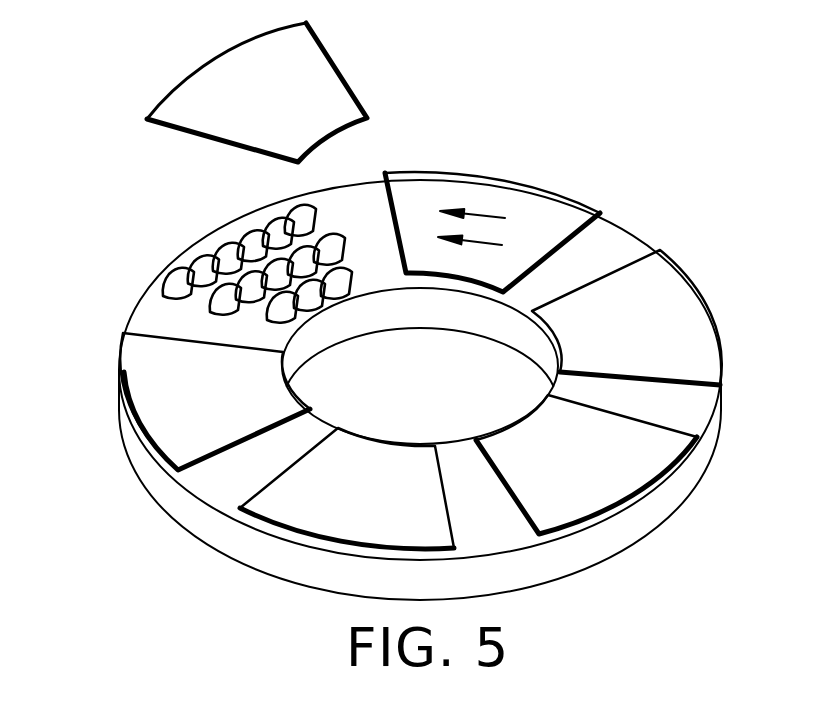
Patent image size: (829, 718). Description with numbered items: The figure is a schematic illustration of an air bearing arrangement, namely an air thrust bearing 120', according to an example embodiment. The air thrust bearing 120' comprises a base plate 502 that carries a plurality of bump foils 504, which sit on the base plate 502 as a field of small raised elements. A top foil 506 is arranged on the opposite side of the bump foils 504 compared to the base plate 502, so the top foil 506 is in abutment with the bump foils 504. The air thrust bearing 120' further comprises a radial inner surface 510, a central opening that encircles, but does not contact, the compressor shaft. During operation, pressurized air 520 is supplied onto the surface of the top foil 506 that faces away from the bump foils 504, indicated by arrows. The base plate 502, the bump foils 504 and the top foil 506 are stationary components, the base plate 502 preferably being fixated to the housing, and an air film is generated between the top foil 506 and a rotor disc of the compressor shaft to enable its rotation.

The air thrust bearing 120' is at (425, 321).
The base plate 502 is at (158, 319).
The bump foils 504 is at (283, 215).
The top foil 506 is at (247, 90).
The radial inner surface 510 is at (413, 318).
The pressurized air 520 is at (489, 215).